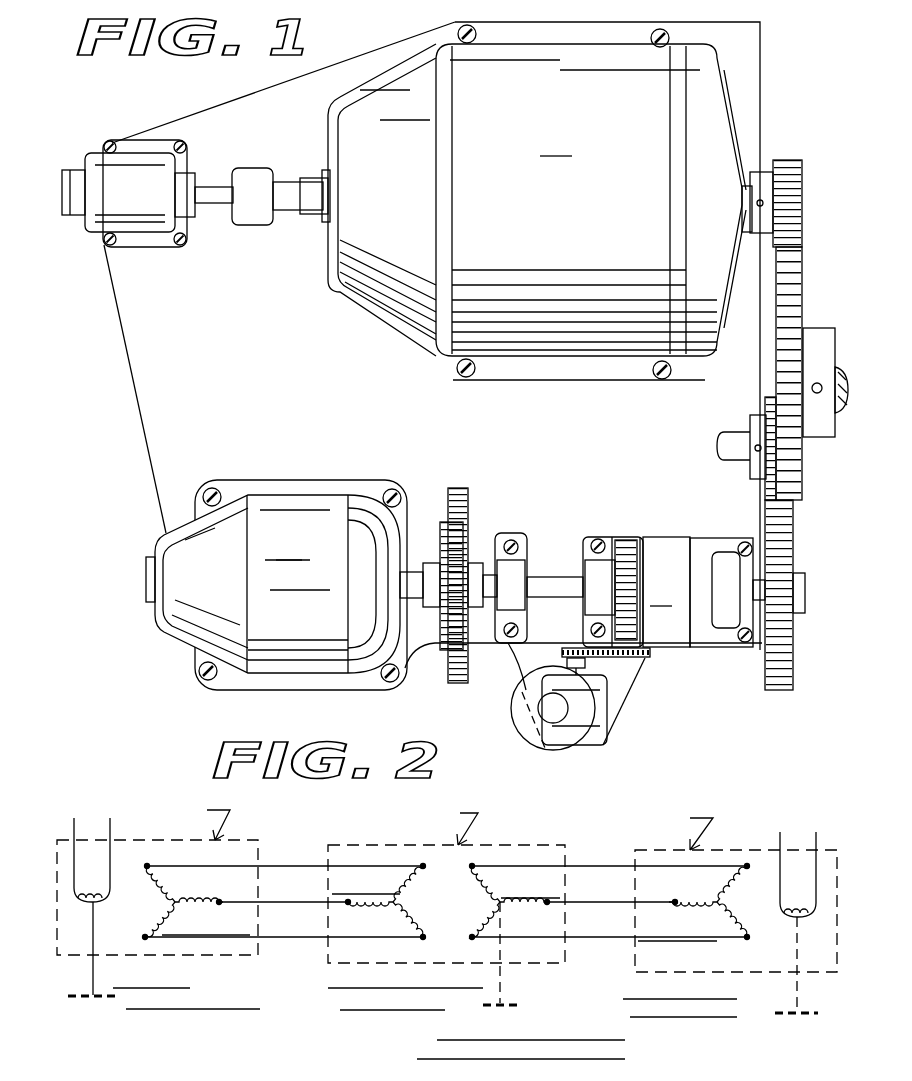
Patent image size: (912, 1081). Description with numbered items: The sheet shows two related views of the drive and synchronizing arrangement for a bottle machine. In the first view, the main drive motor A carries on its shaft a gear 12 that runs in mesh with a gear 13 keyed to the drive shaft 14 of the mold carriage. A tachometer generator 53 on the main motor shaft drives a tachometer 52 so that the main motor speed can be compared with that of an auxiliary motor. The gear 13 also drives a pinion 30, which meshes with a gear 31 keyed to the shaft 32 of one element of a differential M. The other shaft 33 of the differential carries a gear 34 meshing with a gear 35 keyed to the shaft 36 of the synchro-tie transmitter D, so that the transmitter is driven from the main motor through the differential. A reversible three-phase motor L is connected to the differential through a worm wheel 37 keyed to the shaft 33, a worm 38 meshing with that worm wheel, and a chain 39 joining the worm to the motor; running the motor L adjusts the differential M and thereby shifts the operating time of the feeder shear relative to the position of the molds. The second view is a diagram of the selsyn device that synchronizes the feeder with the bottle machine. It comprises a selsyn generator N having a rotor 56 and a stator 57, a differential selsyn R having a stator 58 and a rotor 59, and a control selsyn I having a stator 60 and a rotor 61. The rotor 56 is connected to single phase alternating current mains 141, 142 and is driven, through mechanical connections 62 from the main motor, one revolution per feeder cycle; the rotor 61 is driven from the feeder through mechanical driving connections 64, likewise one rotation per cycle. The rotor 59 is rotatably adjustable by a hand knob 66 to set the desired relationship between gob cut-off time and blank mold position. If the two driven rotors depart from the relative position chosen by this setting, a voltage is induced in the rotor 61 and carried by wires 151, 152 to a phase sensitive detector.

In FIG. 1, the gear 12 is at (808, 136).
In FIG. 1, the gear 13 is at (800, 290).
In FIG. 1, the drive shaft 14 is at (842, 390).
In FIG. 1, the pinion 30 is at (760, 490).
In FIG. 1, the gear 31 is at (782, 675).
In FIG. 1, the shaft 32 is at (806, 590).
In FIG. 1, the shaft 33 is at (560, 585).
In FIG. 1, the gear 34 is at (470, 497).
In FIG. 1, the gear 35 is at (448, 555).
In FIG. 1, the shaft 36 is at (428, 565).
In FIG. 1, the worm wheel 37 is at (630, 543).
In FIG. 1, the worm 38 is at (640, 598).
In FIG. 1, the chain 39 is at (605, 655).
In FIG. 1, the tachometer 52 is at (250, 180).
In FIG. 1, the tachometer generator 53 is at (143, 166).
In FIG. 2, the rotor 56 is at (93, 903).
In FIG. 2, the stator 57 is at (182, 896).
In FIG. 2, the stator 58 is at (392, 908).
In FIG. 2, the rotor 59 is at (508, 907).
In FIG. 2, the stator 60 is at (717, 903).
In FIG. 2, the rotor 61 is at (793, 920).
In FIG. 2, the mechanical connections 62 is at (88, 974).
In FIG. 2, the mechanical driving connections 64 is at (797, 990).
In FIG. 2, the hand knob 66 is at (512, 1004).
In FIG. 2, the main 141 is at (74, 821).
In FIG. 2, the main 142 is at (110, 821).
In FIG. 2, the wire 151 is at (817, 836).
In FIG. 2, the wire 152 is at (780, 838).
In FIG. 1, the main drive motor A is at (530, 336).
In FIG. 1, the synchro-tie transmitter D is at (276, 585).
In FIG. 1, the differential M is at (666, 592).
In FIG. 1, the motor L is at (576, 735).
In FIG. 2, the selsyn generator N is at (158, 908).
In FIG. 2, the differential selsyn R is at (476, 934).
In FIG. 2, the control selsyn I is at (730, 916).